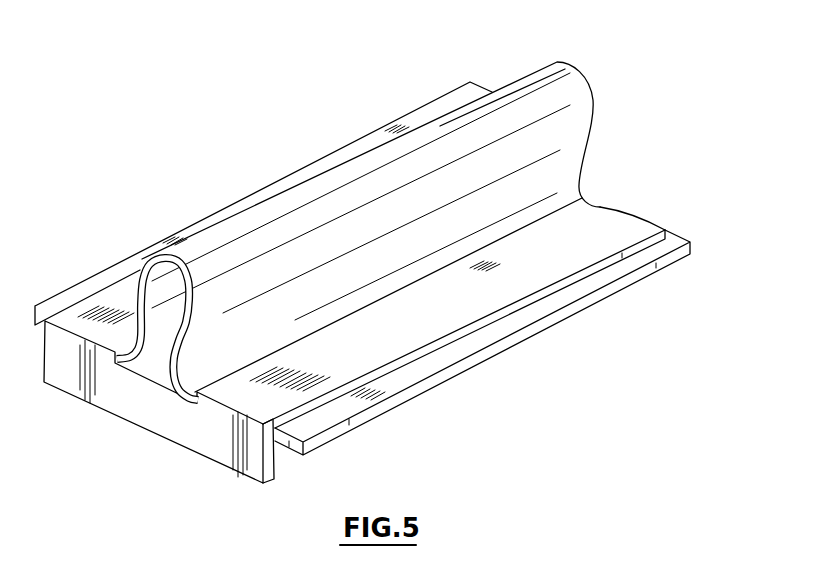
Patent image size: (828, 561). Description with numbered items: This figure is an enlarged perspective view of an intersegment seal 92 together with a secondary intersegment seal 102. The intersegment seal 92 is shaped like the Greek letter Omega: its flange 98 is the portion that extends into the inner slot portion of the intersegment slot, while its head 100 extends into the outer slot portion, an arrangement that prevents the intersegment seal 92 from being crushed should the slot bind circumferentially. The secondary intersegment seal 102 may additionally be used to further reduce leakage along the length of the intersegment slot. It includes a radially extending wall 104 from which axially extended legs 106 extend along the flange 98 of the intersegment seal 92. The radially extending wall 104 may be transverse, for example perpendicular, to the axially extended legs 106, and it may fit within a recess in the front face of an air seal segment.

The intersegment seal 92 is at (556, 92).
The flange 98 is at (405, 385).
The head 100 is at (345, 185).
The secondary intersegment seal 102 is at (600, 222).
The radially extending wall 104 is at (207, 440).
The axially extended legs 106 is at (465, 307).